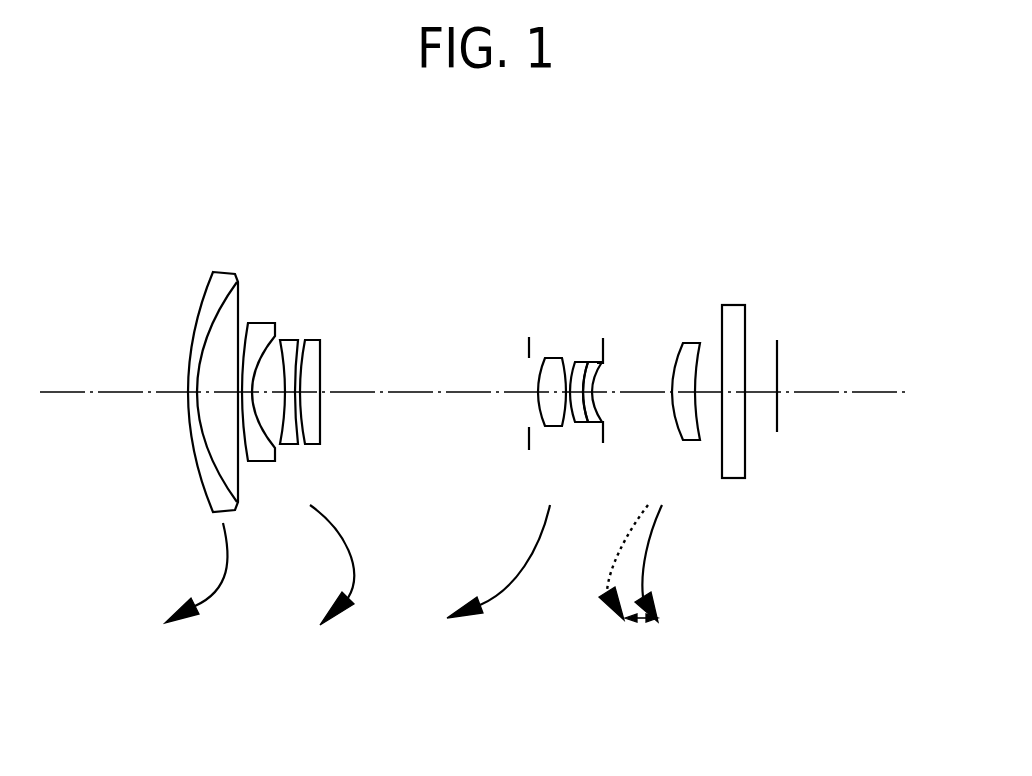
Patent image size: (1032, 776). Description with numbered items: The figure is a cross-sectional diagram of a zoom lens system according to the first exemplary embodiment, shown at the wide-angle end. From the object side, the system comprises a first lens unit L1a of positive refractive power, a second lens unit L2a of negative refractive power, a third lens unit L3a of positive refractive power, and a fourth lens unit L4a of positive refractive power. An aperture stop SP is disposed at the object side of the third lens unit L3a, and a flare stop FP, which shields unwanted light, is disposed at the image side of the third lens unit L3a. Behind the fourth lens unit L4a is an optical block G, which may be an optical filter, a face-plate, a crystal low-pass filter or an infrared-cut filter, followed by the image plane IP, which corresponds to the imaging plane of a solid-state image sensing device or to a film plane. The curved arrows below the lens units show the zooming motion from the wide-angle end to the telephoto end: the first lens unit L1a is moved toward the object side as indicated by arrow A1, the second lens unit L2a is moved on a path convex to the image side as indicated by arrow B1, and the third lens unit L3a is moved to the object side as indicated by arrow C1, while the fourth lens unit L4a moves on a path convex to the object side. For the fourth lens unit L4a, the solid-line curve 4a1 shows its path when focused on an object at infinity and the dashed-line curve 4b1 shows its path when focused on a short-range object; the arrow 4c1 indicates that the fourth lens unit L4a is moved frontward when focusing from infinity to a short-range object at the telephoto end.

The first lens unit L1a is at (250, 222).
The second lens unit L2a is at (333, 258).
The third lens unit L3a is at (603, 225).
The fourth lens unit L4a is at (710, 258).
The aperture stop SP is at (527, 347).
The flare stop FP is at (602, 350).
The optical block G is at (733, 304).
The image plane IP is at (780, 353).
The movement of the first lens unit A1 is at (214, 573).
The movement of the second lens unit B1 is at (356, 565).
The movement of the third lens unit C1 is at (507, 561).
The solid-line curve 4a1 is at (645, 550).
The dashed-line curve 4b1 is at (630, 535).
The arrow 4c1 is at (647, 639).